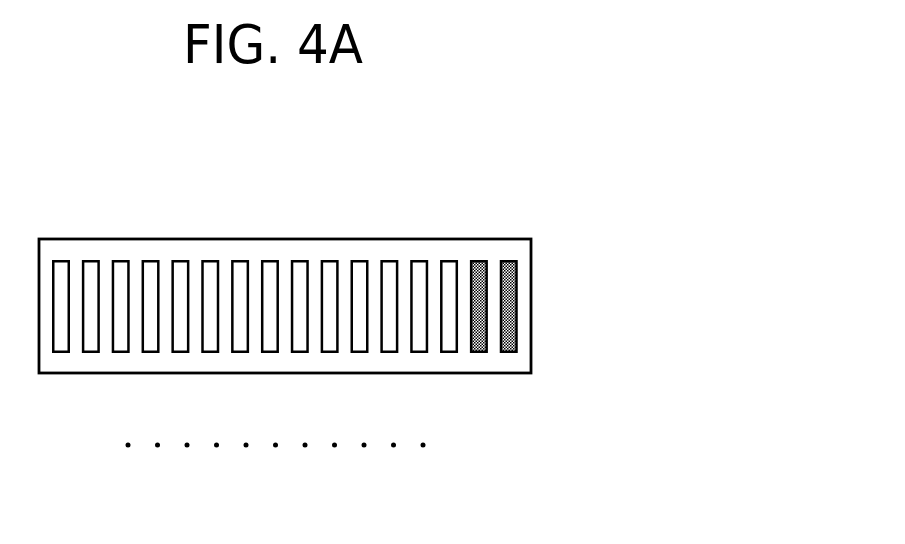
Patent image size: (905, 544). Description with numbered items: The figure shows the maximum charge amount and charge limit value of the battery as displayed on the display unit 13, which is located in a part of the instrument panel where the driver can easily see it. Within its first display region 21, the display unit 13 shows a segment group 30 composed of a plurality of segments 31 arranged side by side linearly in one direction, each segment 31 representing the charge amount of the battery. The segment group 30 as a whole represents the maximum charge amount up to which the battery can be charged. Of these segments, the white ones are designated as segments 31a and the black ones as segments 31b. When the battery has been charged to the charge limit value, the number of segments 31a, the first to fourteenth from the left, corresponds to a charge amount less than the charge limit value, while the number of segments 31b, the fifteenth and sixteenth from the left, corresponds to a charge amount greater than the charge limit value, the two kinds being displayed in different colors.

The display unit 13 is at (308, 257).
The first display region 21 is at (512, 237).
The segment group 30 is at (280, 391).
The segment 31 is at (280, 361).
The segment 31a is at (62, 352).
The segment 31b is at (487, 361).